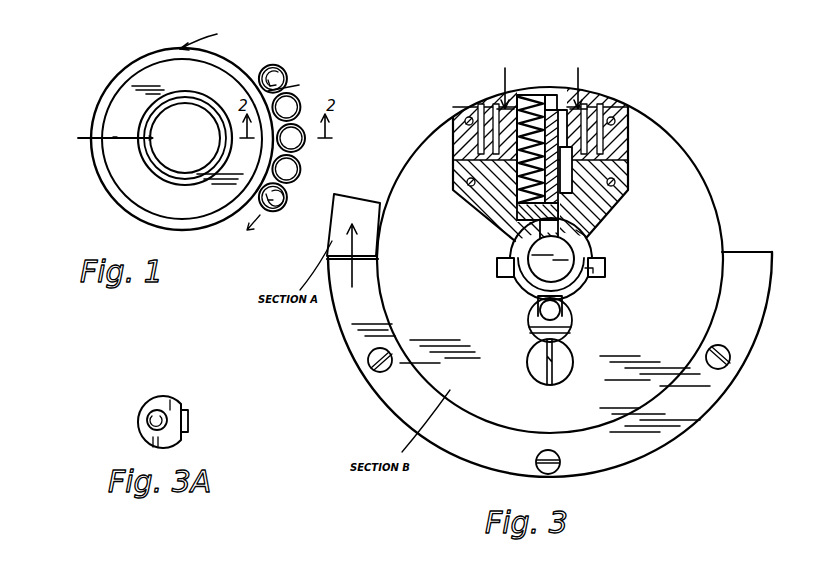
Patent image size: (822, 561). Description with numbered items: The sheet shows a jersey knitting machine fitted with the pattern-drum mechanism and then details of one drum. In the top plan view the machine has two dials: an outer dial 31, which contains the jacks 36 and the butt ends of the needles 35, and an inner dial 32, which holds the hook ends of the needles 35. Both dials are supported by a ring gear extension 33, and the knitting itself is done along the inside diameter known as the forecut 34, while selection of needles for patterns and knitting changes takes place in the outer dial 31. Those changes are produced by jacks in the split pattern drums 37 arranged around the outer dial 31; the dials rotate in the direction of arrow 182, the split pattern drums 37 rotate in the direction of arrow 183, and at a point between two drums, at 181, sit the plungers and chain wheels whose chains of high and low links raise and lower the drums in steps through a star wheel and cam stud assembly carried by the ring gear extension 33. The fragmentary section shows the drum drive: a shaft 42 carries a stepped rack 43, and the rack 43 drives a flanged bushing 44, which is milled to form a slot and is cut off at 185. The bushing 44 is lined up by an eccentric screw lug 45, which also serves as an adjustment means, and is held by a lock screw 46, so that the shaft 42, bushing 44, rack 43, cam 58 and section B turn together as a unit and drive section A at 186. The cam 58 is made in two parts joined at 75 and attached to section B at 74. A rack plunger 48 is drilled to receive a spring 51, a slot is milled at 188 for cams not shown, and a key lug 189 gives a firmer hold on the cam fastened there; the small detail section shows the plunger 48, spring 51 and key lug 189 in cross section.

In FIG. 1, the outer dial 31 is at (112, 188).
In FIG. 1, the inner dial 32 is at (168, 178).
In FIG. 1, the ring gear extension 33 is at (206, 198).
In FIG. 1, the forecut 34 is at (157, 160).
In FIG. 1, the needles 35 is at (113, 137).
In FIG. 1, the jacks 36 is at (85, 138).
In FIG. 1, the split pattern drums 37 is at (298, 110).
In FIG. 1, the plungers and chain wheels 181 is at (293, 88).
In FIG. 1, the arrow 182 is at (221, 28).
In FIG. 1, the arrow 183 is at (285, 63).
In FIG. 3, the shaft 42 is at (537, 267).
In FIG. 3, the stepped rack 43 is at (540, 237).
In FIG. 3, the flanged bushing 44 is at (577, 230).
In FIG. 3, the eccentric screw lug 45 is at (533, 330).
In FIG. 3, the lock screw 46 is at (539, 374).
In FIG. 3, the rack plunger 48 is at (517, 213).
In FIG. 3A, the rack plunger 48 is at (140, 412).
In FIG. 3, the spring 51 is at (520, 96).
In FIG. 3A, the spring 51 is at (157, 414).
In FIG. 3, the cam 58 is at (487, 97).
In FIG. 3, the attachment point of cam to section B 74 is at (466, 119).
In FIG. 3, the joint of cam parts 75 is at (482, 140).
In FIG. 3, the cut-off of flanged bushing 185 is at (497, 262).
In FIG. 3, the drive point of section A 186 is at (367, 273).
In FIG. 3, the milled slot 188 is at (572, 155).
In FIG. 3, the key lug 189 is at (563, 100).
In FIG. 3A, the key lug 189 is at (188, 417).